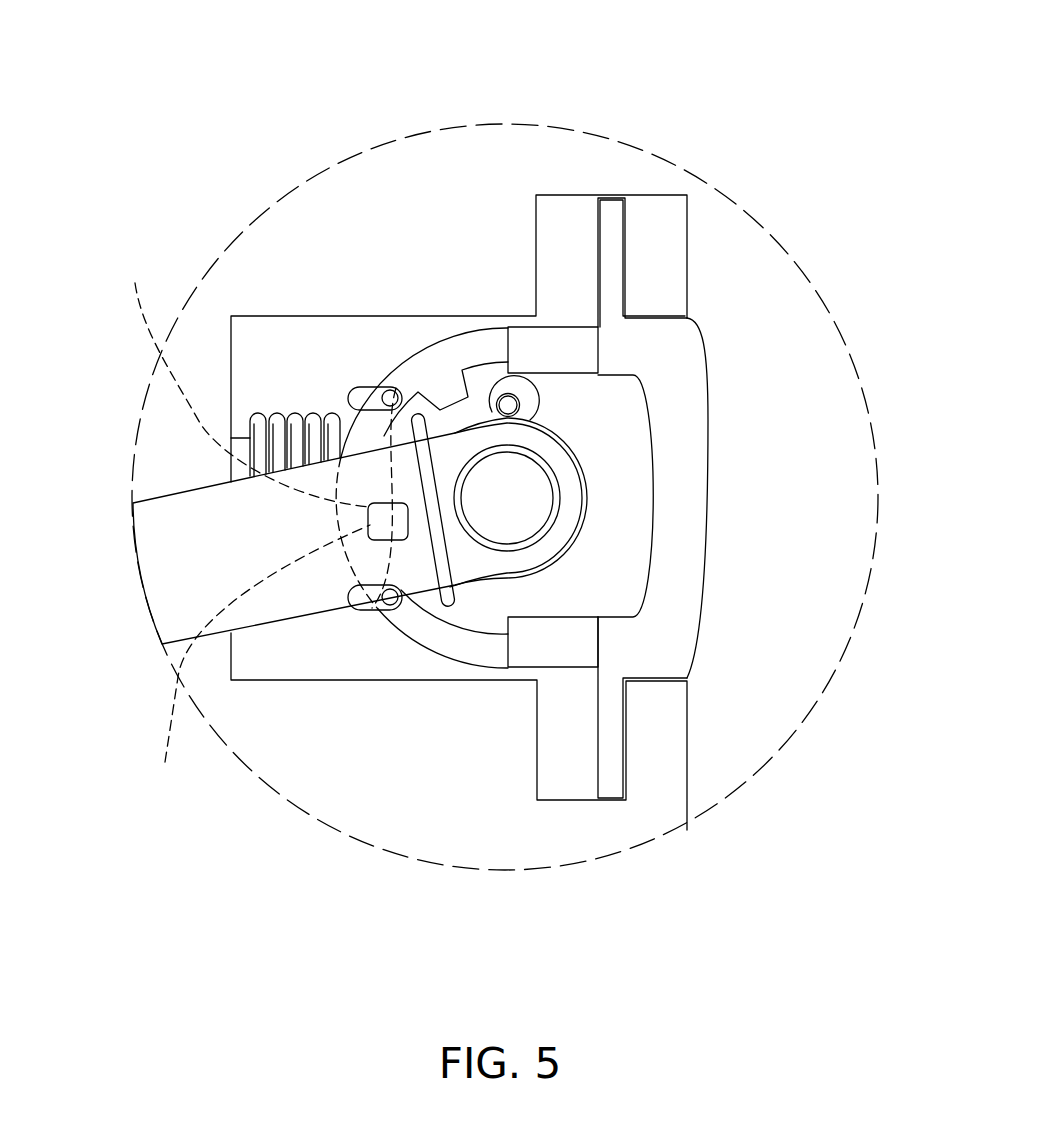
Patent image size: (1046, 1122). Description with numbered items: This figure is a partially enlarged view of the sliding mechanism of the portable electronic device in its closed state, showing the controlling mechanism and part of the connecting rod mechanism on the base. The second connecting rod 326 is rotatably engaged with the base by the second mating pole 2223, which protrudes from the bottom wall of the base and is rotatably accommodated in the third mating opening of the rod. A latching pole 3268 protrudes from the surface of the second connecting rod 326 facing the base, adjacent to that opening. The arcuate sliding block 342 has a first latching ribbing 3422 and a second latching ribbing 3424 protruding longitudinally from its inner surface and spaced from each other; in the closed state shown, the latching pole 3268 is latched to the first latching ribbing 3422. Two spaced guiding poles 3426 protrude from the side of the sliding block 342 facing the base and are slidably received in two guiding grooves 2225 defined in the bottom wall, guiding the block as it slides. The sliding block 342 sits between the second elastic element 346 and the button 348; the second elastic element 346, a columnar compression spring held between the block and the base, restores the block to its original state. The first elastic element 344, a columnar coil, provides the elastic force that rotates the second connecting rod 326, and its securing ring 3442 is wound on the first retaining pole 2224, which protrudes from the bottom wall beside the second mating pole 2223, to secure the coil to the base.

The second connecting rod 326 is at (178, 558).
The latching pole 3268 is at (250, 664).
The sliding block 342 is at (432, 633).
The first latching ribbing 3422 is at (256, 396).
The second latching ribbing 3424 is at (453, 390).
The guiding poles 3426 is at (400, 378).
The first elastic element 344 is at (588, 540).
The securing ring 3442 is at (525, 402).
The second elastic element 346 is at (310, 417).
The button 348 is at (668, 375).
The second mating pole 2223 is at (505, 497).
The first retaining pole 2224 is at (508, 400).
The guiding grooves 2225 is at (363, 383).